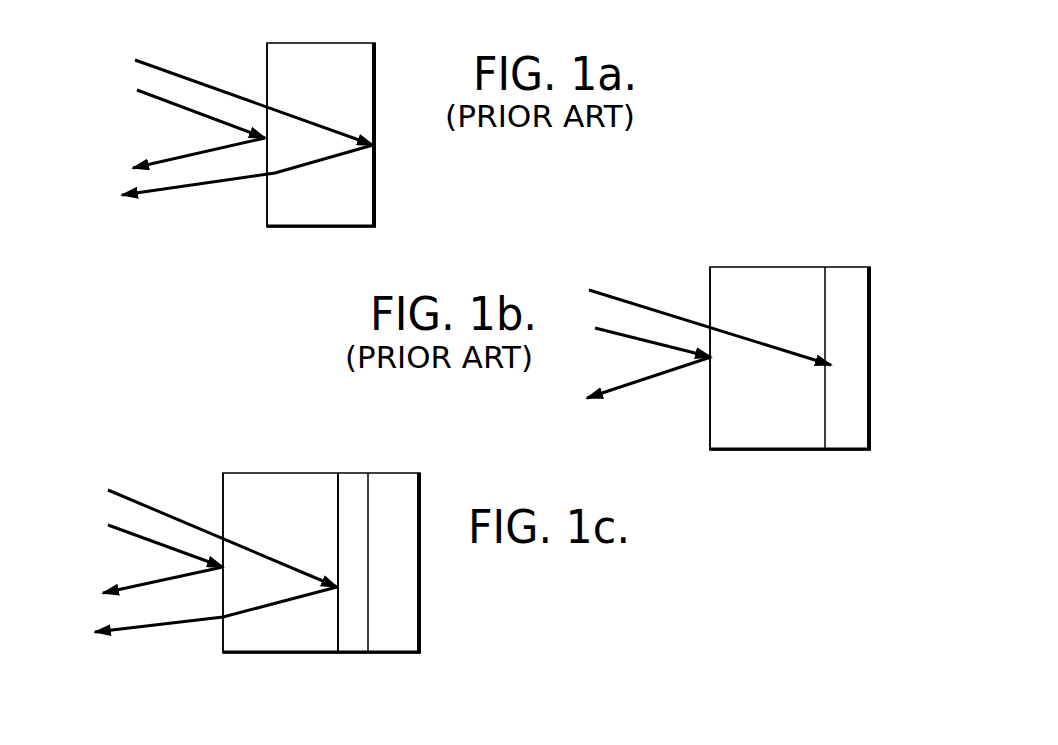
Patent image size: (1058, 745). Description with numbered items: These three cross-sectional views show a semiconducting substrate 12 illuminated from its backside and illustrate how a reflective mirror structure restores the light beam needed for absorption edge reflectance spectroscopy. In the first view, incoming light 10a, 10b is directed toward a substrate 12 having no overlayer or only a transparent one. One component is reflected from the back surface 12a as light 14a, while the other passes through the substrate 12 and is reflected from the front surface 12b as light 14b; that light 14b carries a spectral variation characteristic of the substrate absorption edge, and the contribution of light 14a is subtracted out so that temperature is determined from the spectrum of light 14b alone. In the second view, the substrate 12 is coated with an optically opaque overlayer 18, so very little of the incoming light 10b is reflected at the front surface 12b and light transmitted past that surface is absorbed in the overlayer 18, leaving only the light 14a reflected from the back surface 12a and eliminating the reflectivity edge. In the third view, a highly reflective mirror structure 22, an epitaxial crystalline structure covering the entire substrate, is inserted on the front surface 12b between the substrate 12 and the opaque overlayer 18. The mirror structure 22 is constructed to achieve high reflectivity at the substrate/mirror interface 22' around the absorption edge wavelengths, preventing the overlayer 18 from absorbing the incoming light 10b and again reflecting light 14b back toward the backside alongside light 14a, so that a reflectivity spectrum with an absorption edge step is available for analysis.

In FIG. 1A, the incoming light 10a is at (167, 105).
In FIG. 1B, the incoming light 10a is at (605, 332).
In FIG. 1C, the incoming light 10a is at (130, 532).
In FIG. 1A, the incoming light 10b is at (169, 70).
In FIG. 1B, the incoming light 10b is at (619, 297).
In FIG. 1C, the incoming light 10b is at (140, 497).
In FIG. 1A, the semiconducting substrate 12 is at (275, 73).
In FIG. 1B, the semiconducting substrate 12 is at (733, 287).
In FIG. 1C, the semiconducting substrate 12 is at (240, 498).
In FIG. 1A, the back surface 12a is at (266, 208).
In FIG. 1B, the back surface 12a is at (710, 427).
In FIG. 1C, the back surface 12a is at (223, 630).
In FIG. 1A, the front surface 12b is at (378, 202).
In FIG. 1B, the front surface 12b is at (827, 428).
In FIG. 1C, the front surface 12b is at (345, 682).
In FIG. 1A, the light reflected from the back surface 14a is at (203, 155).
In FIG. 1B, the light reflected from the back surface 14a is at (650, 382).
In FIG. 1C, the light reflected from the back surface 14a is at (155, 586).
In FIG. 1A, the light reflected from the front surface 14b is at (197, 192).
In FIG. 1C, the light reflected from the front surface 14b is at (155, 628).
In FIG. 1B, the optically opaque overlayer 18 is at (857, 403).
In FIG. 1C, the optically opaque overlayer 18 is at (405, 568).
In FIG. 1C, the highly reflective mirror structure 22 is at (379, 550).
In FIG. 1C, the substrate/mirror interface 22' is at (314, 542).